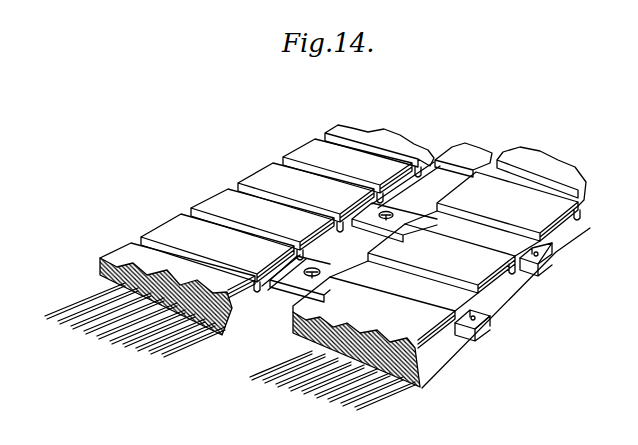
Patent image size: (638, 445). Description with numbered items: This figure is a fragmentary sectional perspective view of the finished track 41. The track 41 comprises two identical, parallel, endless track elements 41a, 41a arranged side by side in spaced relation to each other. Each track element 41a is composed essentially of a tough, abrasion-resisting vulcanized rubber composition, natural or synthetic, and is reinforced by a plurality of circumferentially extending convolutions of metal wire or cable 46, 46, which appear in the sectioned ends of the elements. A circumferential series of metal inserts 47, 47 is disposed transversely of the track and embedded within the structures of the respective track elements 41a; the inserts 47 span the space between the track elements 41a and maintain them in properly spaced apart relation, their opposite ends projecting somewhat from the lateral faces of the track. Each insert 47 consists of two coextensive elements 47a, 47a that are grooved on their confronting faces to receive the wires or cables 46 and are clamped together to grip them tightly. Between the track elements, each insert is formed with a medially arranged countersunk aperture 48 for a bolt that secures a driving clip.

The track 41 is at (207, 178).
The track element 41a is at (97, 263).
The metal wire or cable 46 is at (45, 316).
The metal insert 47 is at (536, 282).
The insert element 47a is at (543, 246).
The countersunk aperture 48 is at (388, 212).